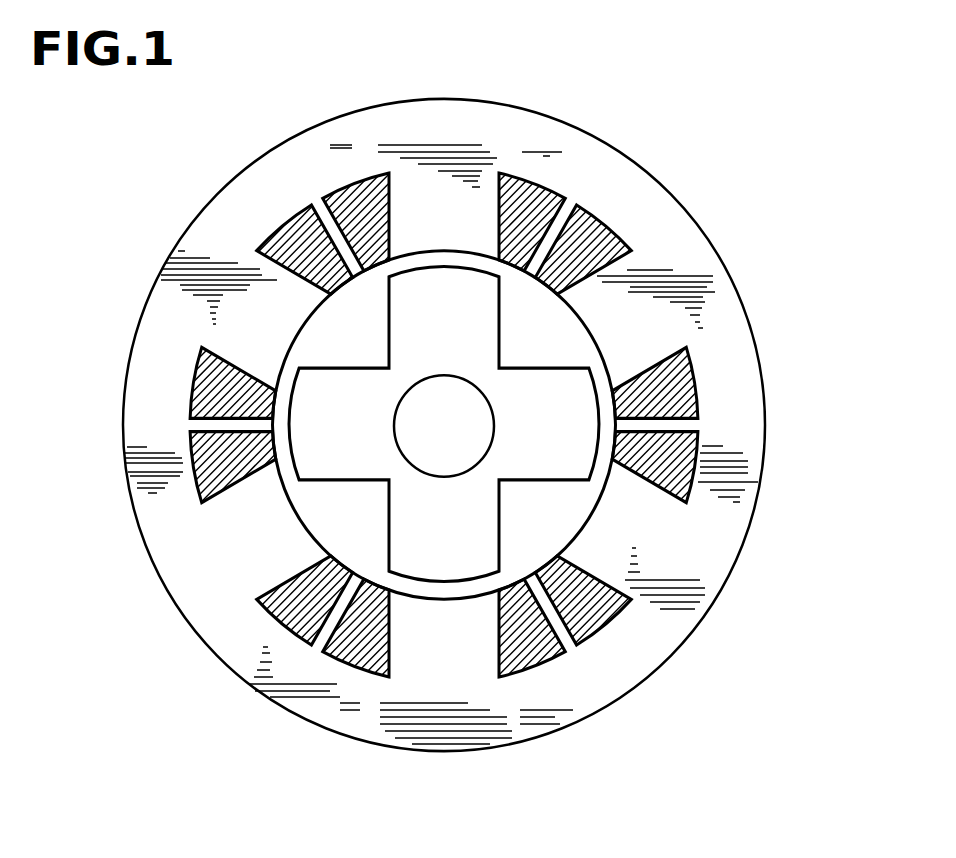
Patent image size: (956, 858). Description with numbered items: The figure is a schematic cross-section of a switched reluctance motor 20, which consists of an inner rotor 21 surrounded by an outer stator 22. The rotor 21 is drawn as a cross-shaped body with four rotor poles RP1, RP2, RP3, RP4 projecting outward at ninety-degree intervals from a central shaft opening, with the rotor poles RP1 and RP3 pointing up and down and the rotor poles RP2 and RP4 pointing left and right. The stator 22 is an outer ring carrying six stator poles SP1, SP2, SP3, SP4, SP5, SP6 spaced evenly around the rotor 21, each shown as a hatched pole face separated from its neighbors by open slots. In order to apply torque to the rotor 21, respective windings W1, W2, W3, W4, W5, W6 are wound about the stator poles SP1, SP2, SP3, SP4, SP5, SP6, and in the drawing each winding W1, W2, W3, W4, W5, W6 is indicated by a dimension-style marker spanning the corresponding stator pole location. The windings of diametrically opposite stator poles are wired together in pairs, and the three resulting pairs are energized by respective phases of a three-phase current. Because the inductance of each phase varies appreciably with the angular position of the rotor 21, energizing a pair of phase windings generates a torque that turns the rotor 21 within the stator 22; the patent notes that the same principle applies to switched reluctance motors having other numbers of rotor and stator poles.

The switched reluctance motor 20 is at (614, 111).
The rotor 21 is at (478, 353).
The stator 22 is at (608, 160).
The stator pole SP1 is at (442, 231).
The stator pole SP2 is at (262, 329).
The stator pole SP3 is at (265, 527).
The stator pole SP4 is at (442, 623).
The stator pole SP5 is at (624, 525).
The stator pole SP6 is at (624, 329).
The rotor pole RP1 is at (442, 281).
The rotor pole RP2 is at (310, 426).
The rotor pole RP3 is at (447, 578).
The rotor pole RP4 is at (576, 426).
The winding W1 is at (444, 122).
The winding W2 is at (179, 271).
The winding W3 is at (179, 578).
The winding W4 is at (444, 730).
The winding W5 is at (708, 578).
The winding W6 is at (708, 272).